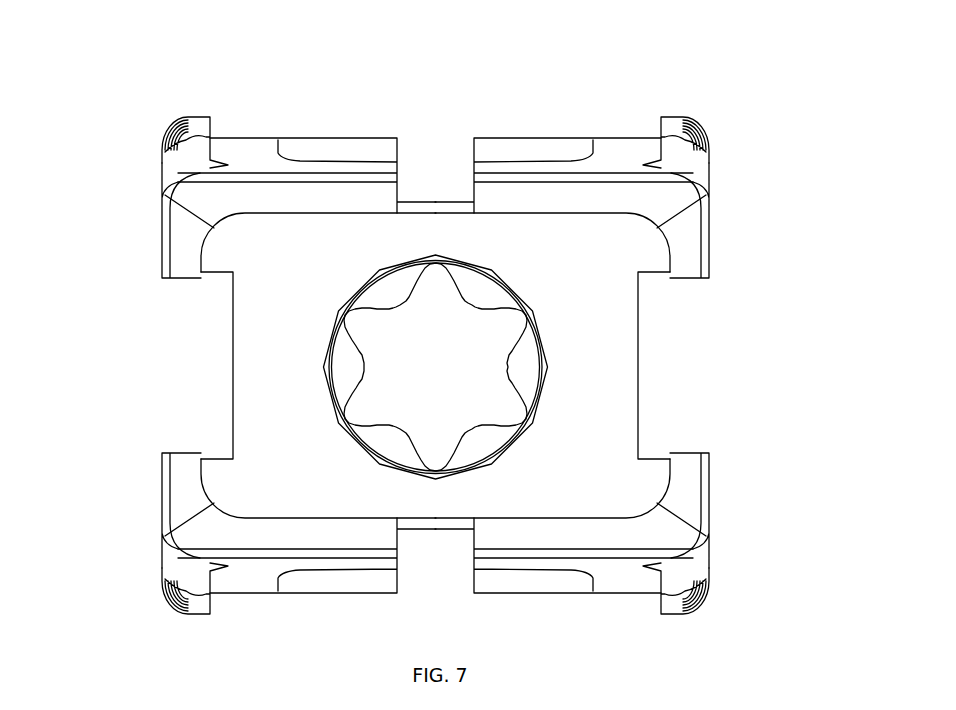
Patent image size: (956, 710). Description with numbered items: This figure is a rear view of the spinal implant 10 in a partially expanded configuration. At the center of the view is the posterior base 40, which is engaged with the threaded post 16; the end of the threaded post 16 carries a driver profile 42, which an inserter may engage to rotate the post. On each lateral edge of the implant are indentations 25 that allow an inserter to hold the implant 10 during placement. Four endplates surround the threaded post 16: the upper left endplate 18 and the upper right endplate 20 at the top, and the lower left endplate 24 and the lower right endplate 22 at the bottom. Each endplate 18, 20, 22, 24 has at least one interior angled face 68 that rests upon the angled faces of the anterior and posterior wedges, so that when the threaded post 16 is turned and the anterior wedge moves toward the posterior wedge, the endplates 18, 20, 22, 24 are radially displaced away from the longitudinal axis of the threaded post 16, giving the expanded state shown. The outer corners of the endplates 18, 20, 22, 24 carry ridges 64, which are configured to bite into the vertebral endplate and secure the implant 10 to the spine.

The spinal implant 10 is at (103, 360).
The threaded post 16 is at (416, 385).
The upper left endplate 18 is at (149, 196).
The upper right endplate 20 is at (614, 147).
The lower right endplate 22 is at (641, 574).
The lower left endplate 24 is at (144, 532).
The indentations 25 is at (669, 331).
The posterior base 40 is at (555, 482).
The driver profile 42 is at (398, 286).
The ridges 64 is at (170, 106).
The interior angled face 68 is at (286, 183).